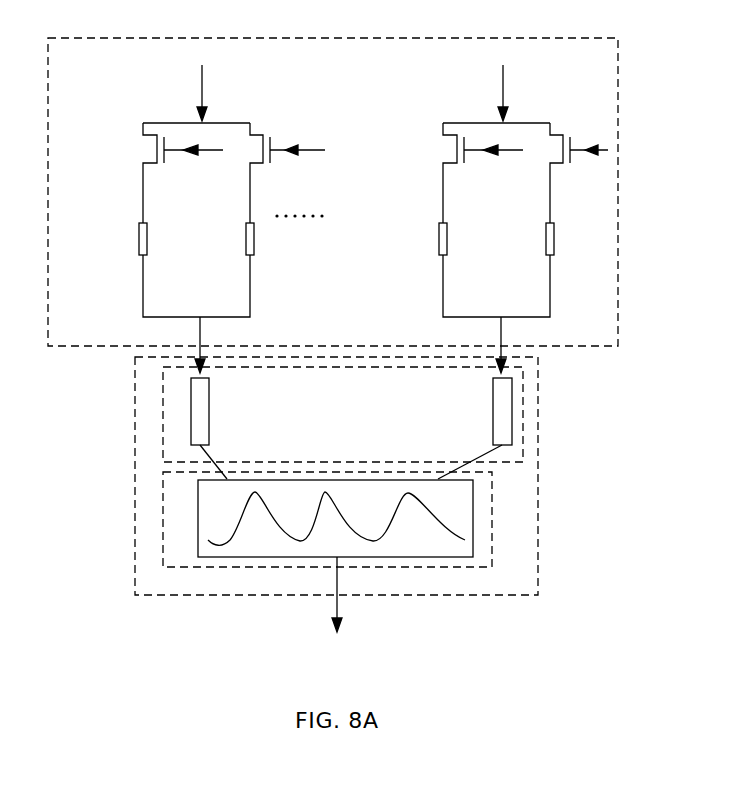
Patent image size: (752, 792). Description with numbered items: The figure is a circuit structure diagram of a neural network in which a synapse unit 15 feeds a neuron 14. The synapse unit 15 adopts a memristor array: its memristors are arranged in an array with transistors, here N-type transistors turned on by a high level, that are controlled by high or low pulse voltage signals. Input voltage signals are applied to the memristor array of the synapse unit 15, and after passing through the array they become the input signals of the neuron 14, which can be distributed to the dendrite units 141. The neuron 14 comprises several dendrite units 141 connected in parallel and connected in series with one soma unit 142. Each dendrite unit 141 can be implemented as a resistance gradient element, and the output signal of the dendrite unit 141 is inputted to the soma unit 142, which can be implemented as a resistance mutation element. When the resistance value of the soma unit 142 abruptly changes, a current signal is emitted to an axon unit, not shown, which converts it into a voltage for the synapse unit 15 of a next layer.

The synapse unit 15 is at (335, 37).
The neuron 14 is at (537, 407).
The dendrite unit 141 is at (525, 430).
The soma unit 142 is at (493, 517).